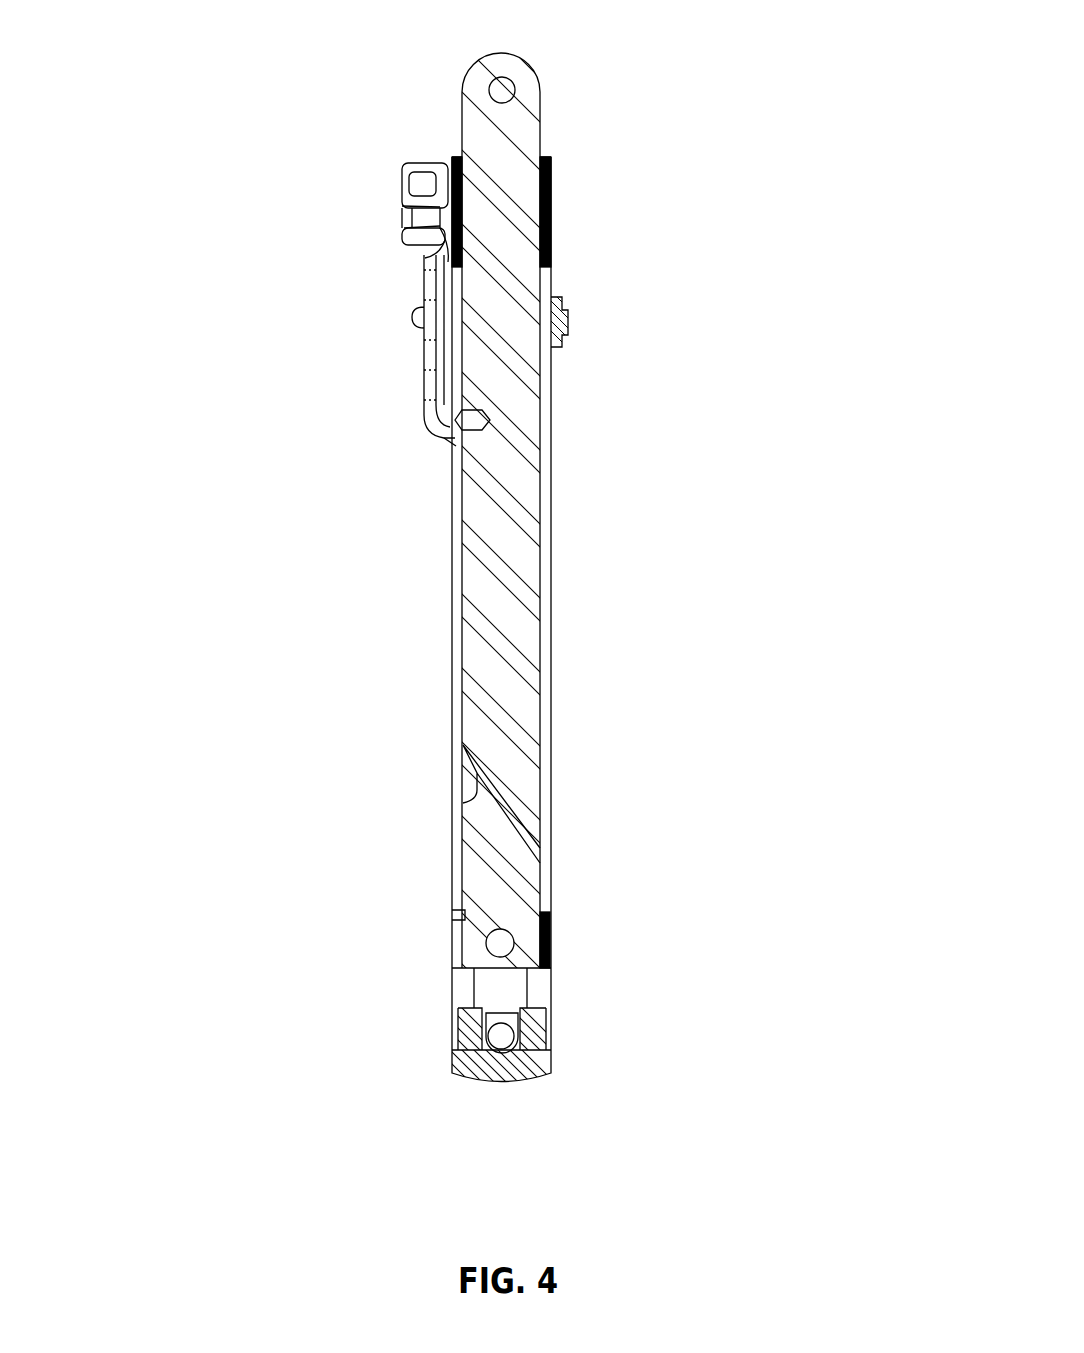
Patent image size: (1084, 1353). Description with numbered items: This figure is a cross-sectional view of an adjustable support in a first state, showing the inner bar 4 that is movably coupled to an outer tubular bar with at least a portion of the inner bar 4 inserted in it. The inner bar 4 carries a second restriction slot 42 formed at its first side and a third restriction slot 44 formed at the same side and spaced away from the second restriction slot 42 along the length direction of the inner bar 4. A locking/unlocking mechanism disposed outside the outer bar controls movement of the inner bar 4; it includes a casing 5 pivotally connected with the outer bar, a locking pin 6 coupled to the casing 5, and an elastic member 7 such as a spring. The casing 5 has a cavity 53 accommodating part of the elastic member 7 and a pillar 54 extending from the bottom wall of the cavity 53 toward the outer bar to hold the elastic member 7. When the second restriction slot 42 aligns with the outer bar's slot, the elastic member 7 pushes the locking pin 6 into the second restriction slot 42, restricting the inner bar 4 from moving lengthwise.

The inner bar 4 is at (542, 160).
The second restriction slot 42 is at (465, 408).
The third restriction slot 44 is at (540, 848).
The casing 5 is at (436, 352).
The cavity 53 is at (448, 232).
The pillar 54 is at (440, 205).
The locking pin 6 is at (452, 442).
The elastic member 7 is at (448, 195).